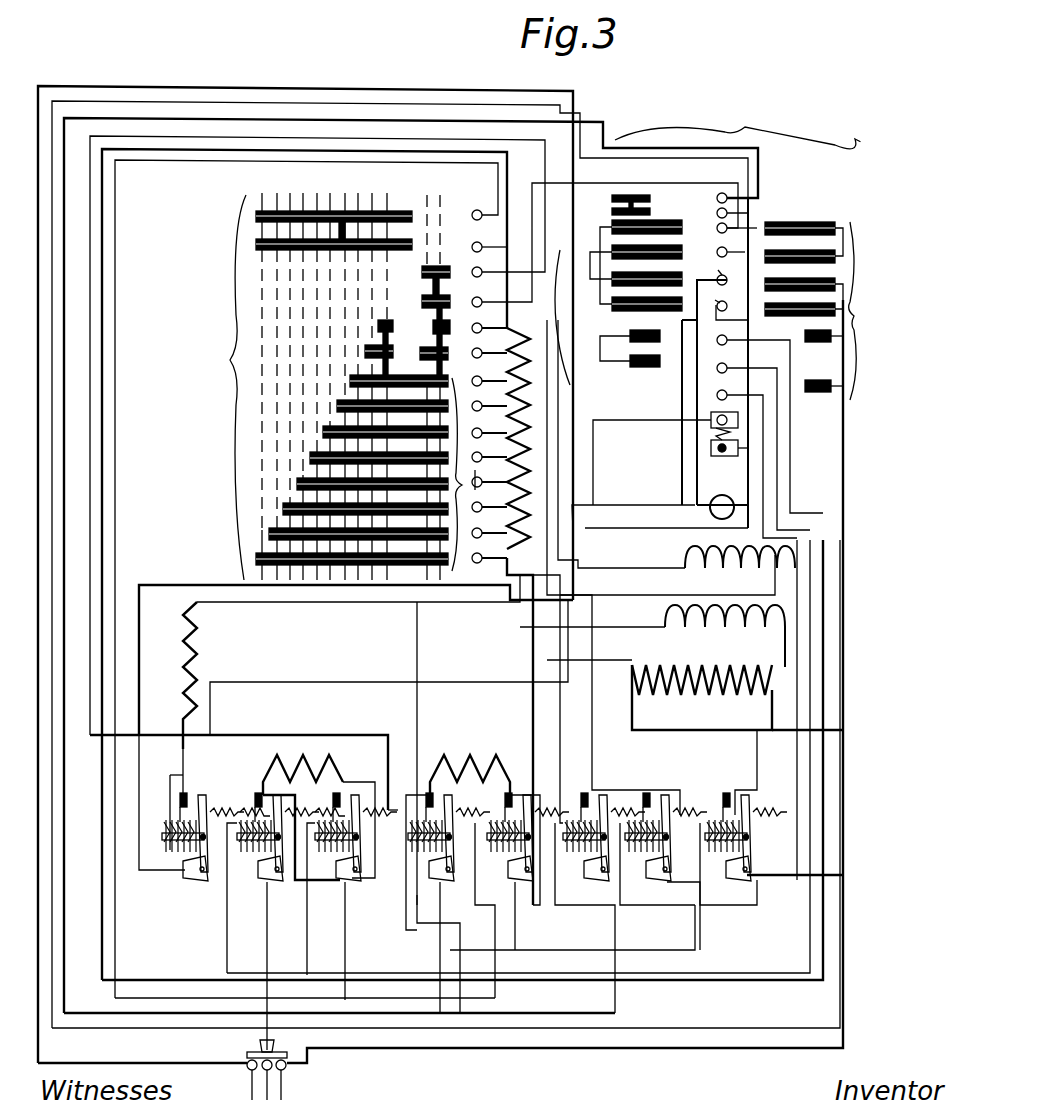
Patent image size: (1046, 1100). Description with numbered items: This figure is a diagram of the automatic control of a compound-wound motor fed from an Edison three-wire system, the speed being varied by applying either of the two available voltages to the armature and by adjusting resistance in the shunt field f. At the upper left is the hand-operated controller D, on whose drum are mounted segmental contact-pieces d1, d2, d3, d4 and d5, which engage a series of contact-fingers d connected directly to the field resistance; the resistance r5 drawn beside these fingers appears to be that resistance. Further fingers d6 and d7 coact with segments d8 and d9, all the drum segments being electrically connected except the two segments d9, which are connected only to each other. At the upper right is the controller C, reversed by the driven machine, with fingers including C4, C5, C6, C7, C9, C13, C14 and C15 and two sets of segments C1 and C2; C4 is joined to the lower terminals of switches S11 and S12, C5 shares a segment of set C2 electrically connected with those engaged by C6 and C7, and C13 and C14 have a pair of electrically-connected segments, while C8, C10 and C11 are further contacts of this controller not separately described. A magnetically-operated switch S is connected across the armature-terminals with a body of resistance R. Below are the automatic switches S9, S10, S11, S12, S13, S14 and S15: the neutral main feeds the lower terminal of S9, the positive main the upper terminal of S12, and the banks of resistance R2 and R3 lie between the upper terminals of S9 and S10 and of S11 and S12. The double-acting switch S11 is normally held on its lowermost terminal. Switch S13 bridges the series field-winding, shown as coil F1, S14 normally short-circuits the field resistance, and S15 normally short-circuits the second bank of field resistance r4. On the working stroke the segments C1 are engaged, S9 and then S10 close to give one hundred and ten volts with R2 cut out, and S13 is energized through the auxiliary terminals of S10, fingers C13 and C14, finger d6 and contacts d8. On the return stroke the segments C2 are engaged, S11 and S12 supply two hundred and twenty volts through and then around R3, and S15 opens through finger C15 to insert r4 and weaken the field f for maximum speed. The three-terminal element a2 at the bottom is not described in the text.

The controller D is at (334, 380).
The contact-fingers d is at (489, 443).
The segmental contact-piece d1 is at (455, 325).
The segmental contact-piece d2 is at (448, 341).
The segmental contact-piece d3 is at (400, 325).
The segmental contact-piece d4 is at (392, 353).
The segmental contact-piece d5 is at (464, 473).
The finger d6 is at (489, 287).
The finger d7 is at (490, 231).
The segments d8 is at (446, 300).
The segments d9 is at (400, 235).
The resistance r5 is at (530, 440).
The body of resistance R is at (201, 697).
The bank of resistance R2 is at (319, 805).
The bank of resistance R3 is at (460, 770).
The controller C is at (707, 317).
The segments C1 is at (613, 348).
The set of contacts C2 is at (810, 296).
The finger C4 is at (724, 230).
The finger C5 is at (717, 250).
The finger C6 is at (712, 270).
The finger C7 is at (713, 297).
The controller contact C8 is at (765, 414).
The finger C9 is at (757, 437).
The controller contact C10 is at (674, 449).
The controller contact C11 is at (718, 452).
The finger C13 is at (708, 198).
The finger C14 is at (708, 216).
The finger C15 is at (756, 455).
The field coil F1 is at (740, 571).
The shunt field f is at (725, 636).
The bank of field resistance r4 is at (702, 697).
The magnetically-operated switch S is at (204, 800).
The switch S9 is at (273, 921).
The switch S10 is at (352, 896).
The double-acting switch S11 is at (439, 903).
The switch S12 is at (522, 895).
The switch S13 is at (617, 896).
The switch S14 is at (663, 871).
The switch S15 is at (771, 817).
The plug connector a2 is at (286, 1070).